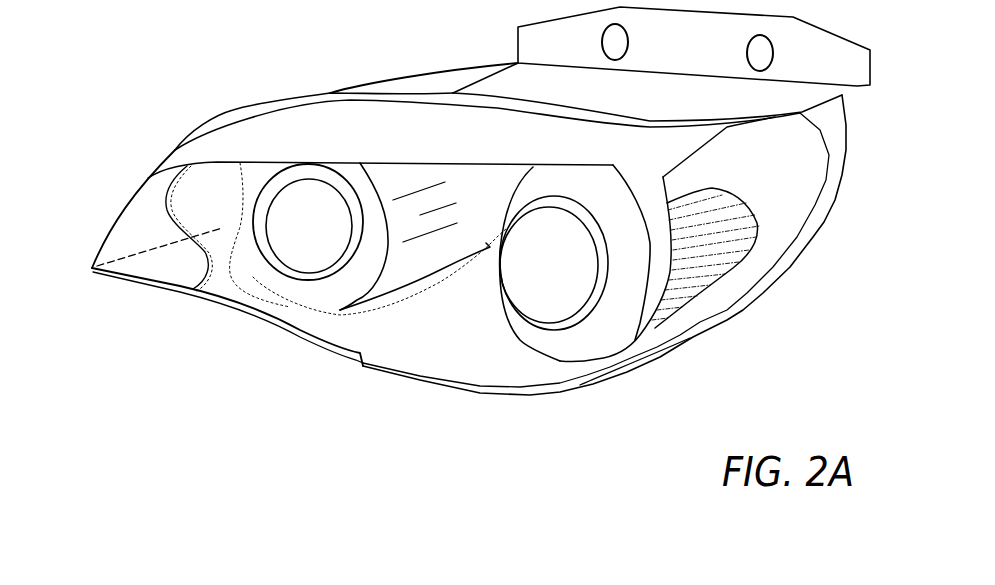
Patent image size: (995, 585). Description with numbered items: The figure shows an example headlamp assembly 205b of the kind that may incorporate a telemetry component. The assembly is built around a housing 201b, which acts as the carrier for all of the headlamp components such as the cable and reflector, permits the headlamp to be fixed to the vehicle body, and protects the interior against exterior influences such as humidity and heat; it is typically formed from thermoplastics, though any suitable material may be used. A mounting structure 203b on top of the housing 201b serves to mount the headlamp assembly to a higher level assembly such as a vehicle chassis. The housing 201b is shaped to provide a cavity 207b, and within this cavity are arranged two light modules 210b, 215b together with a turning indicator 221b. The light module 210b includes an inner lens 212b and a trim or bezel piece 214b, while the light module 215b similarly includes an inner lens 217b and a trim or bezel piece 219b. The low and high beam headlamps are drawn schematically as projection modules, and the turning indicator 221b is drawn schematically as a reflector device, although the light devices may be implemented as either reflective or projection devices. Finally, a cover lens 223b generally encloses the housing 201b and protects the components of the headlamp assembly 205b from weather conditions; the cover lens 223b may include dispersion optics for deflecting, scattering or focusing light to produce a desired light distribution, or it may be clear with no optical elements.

The housing 201b is at (452, 144).
The mounting structure 203b is at (698, 53).
The headlamp assembly 205b is at (277, 73).
The cavity 207b is at (486, 335).
The light module 210b is at (518, 342).
The lens 212b is at (569, 280).
The trim or bezel piece 214b is at (560, 347).
The light module 215b is at (403, 275).
The lens 217b is at (329, 230).
The trim or bezel piece 219b is at (273, 286).
The turning indicator 221b is at (750, 252).
The cover lens 223b is at (137, 208).